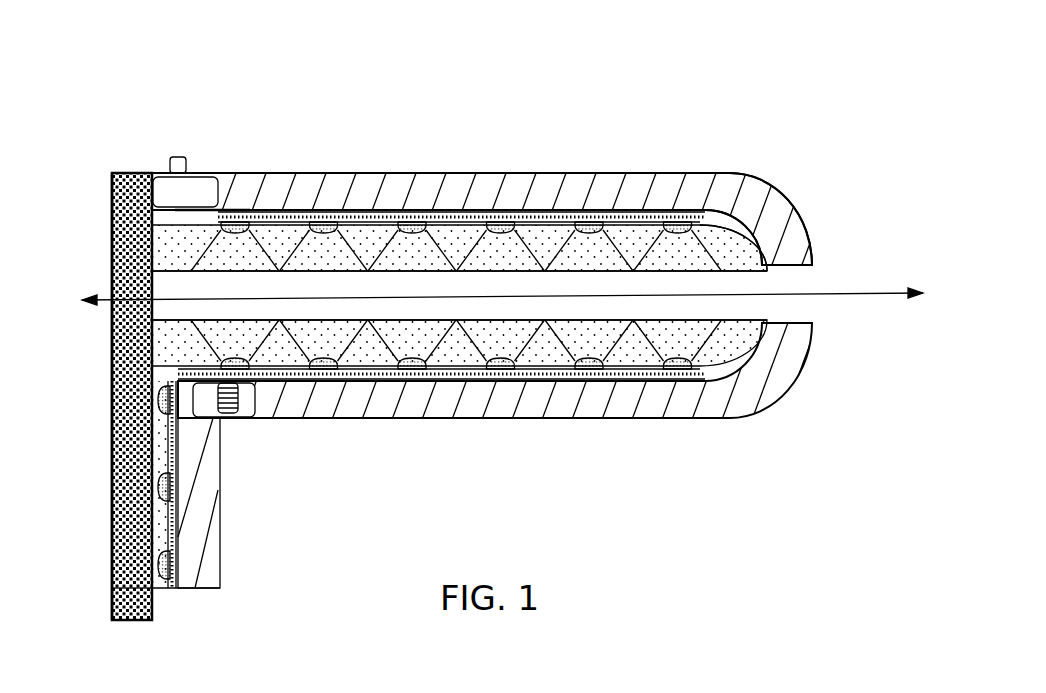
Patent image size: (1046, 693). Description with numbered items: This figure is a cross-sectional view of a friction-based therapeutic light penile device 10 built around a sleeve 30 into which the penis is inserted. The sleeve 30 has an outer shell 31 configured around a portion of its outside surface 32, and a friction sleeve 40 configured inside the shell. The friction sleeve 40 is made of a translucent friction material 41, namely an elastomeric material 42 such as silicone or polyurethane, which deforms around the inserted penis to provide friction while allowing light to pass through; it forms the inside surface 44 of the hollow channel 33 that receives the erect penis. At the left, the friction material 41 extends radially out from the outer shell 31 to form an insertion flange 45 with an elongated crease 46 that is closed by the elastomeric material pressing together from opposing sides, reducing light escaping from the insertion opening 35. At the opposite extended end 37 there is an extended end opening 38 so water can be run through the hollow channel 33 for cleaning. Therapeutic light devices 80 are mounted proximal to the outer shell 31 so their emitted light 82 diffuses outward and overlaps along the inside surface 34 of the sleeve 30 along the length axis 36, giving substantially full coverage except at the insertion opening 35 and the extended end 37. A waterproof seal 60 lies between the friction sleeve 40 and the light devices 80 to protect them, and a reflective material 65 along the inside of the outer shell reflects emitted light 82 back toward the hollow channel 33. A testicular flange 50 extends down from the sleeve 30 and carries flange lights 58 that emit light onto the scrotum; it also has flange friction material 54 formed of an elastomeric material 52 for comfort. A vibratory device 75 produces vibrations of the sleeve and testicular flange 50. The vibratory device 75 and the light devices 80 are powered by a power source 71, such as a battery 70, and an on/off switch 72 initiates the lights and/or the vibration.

The friction-based therapeutic light penile device 10 is at (218, 75).
The sleeve 30 is at (445, 183).
The outer shell 31 is at (525, 190).
The outside surface 32 is at (347, 165).
The hollow channel 33 is at (772, 284).
The inside surface 34 is at (635, 210).
The insertion opening 35 is at (133, 318).
The length axis 36 is at (898, 290).
The extended end 37 is at (803, 248).
The extended end opening 38 is at (788, 303).
The friction sleeve 40 is at (683, 240).
The friction material 41 is at (732, 342).
The elastomeric material 42 is at (157, 227).
The inside surface of the hollow channel 44 is at (185, 265).
The insertion flange 45 is at (112, 375).
The elongated crease 46 is at (177, 313).
The testicular flange 50 is at (207, 487).
The elastomeric material 52 is at (163, 462).
The flange friction material 54 is at (128, 620).
The flange lights 58 is at (165, 487).
The waterproof seal 60 is at (776, 240).
The reflective material 65 is at (765, 238).
The battery 70 is at (150, 192).
The power source 71 is at (195, 200).
The on/off switch 72 is at (170, 160).
The vibratory device 75 is at (230, 417).
The therapeutic light device 80 is at (235, 220).
The emitted light 82 is at (240, 247).